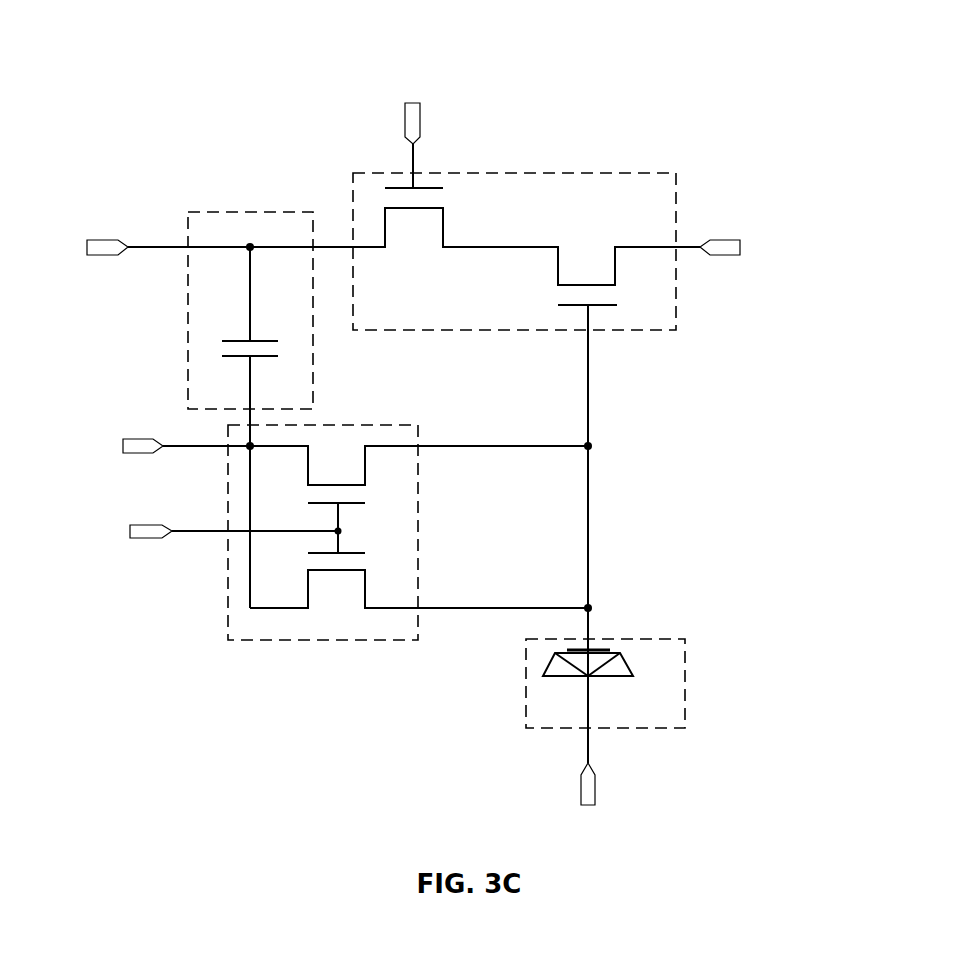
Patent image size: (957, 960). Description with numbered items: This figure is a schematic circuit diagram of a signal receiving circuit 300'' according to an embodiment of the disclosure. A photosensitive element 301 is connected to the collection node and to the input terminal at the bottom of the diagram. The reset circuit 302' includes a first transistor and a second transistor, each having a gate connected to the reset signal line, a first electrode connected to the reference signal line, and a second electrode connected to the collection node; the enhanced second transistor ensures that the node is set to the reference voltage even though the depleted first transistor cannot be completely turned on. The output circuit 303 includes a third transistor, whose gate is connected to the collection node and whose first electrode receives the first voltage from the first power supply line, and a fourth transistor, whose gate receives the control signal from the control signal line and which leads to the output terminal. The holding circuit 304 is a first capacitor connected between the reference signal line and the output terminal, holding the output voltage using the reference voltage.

The signal receiving circuit 300'' is at (414, 427).
The photodiode unit 301 is at (643, 639).
The reset circuit 302' is at (332, 504).
The output circuit 303 is at (627, 173).
The holding circuit 304 is at (189, 212).